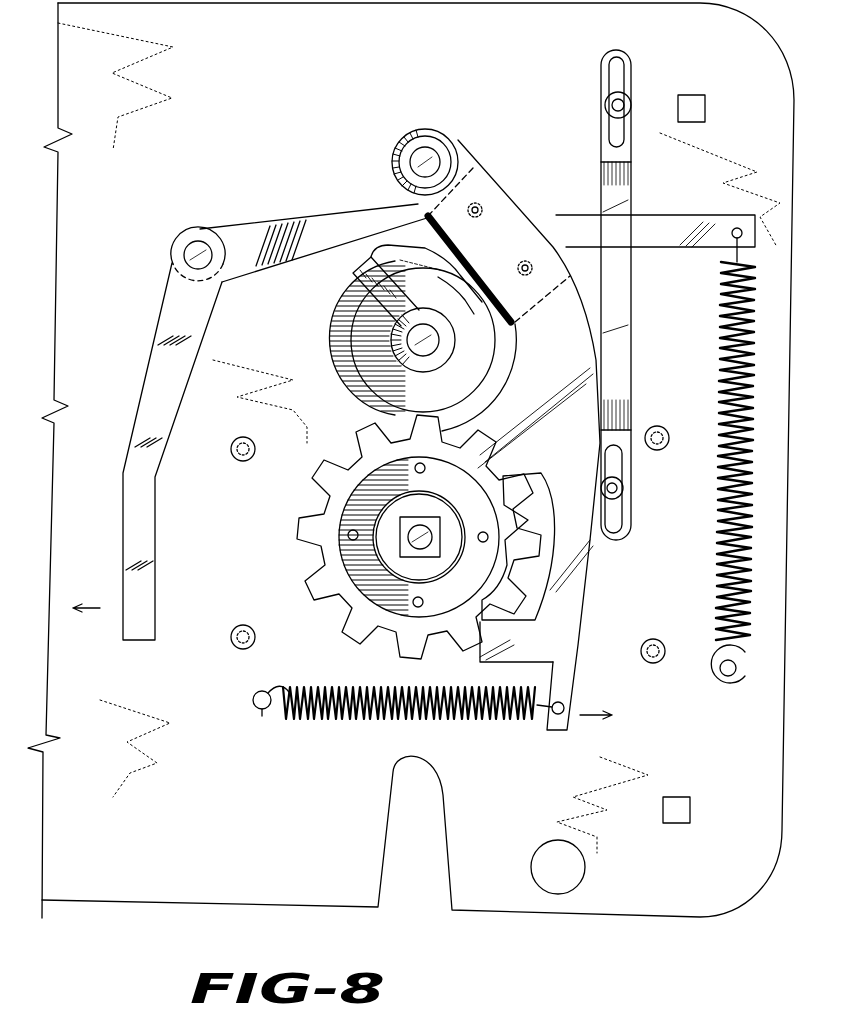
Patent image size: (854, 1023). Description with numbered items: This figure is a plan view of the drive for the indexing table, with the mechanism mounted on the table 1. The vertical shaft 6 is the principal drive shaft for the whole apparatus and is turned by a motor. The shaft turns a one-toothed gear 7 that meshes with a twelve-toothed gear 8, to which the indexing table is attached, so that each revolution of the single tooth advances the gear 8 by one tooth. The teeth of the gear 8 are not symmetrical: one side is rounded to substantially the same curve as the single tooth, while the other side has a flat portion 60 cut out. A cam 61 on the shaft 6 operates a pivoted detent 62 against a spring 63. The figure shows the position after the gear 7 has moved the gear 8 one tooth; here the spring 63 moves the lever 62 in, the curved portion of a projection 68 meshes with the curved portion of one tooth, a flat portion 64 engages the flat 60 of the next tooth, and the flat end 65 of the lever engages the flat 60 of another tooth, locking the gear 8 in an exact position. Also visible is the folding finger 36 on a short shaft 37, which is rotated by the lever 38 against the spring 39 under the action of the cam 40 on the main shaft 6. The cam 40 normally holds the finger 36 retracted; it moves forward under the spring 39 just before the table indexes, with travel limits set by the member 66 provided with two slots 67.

The table 1 is at (208, 785).
The vertical shaft 6 is at (433, 338).
The one-toothed gear 7 is at (352, 275).
The twelve-toothed gear 8 is at (367, 440).
The folding finger 36 is at (157, 558).
The short shaft 37 is at (183, 239).
The lever 38 is at (689, 215).
The spring 39 is at (717, 571).
The cam 40 is at (412, 257).
The flat portion 60 is at (312, 545).
The cam 61 is at (340, 326).
The pivoted detent 62 is at (566, 349).
The spring 63 is at (346, 690).
The flat portion 64 is at (518, 476).
The flat end 65 is at (483, 638).
The member 66 is at (626, 188).
The slots 67 is at (621, 73).
The projection 68 is at (478, 470).